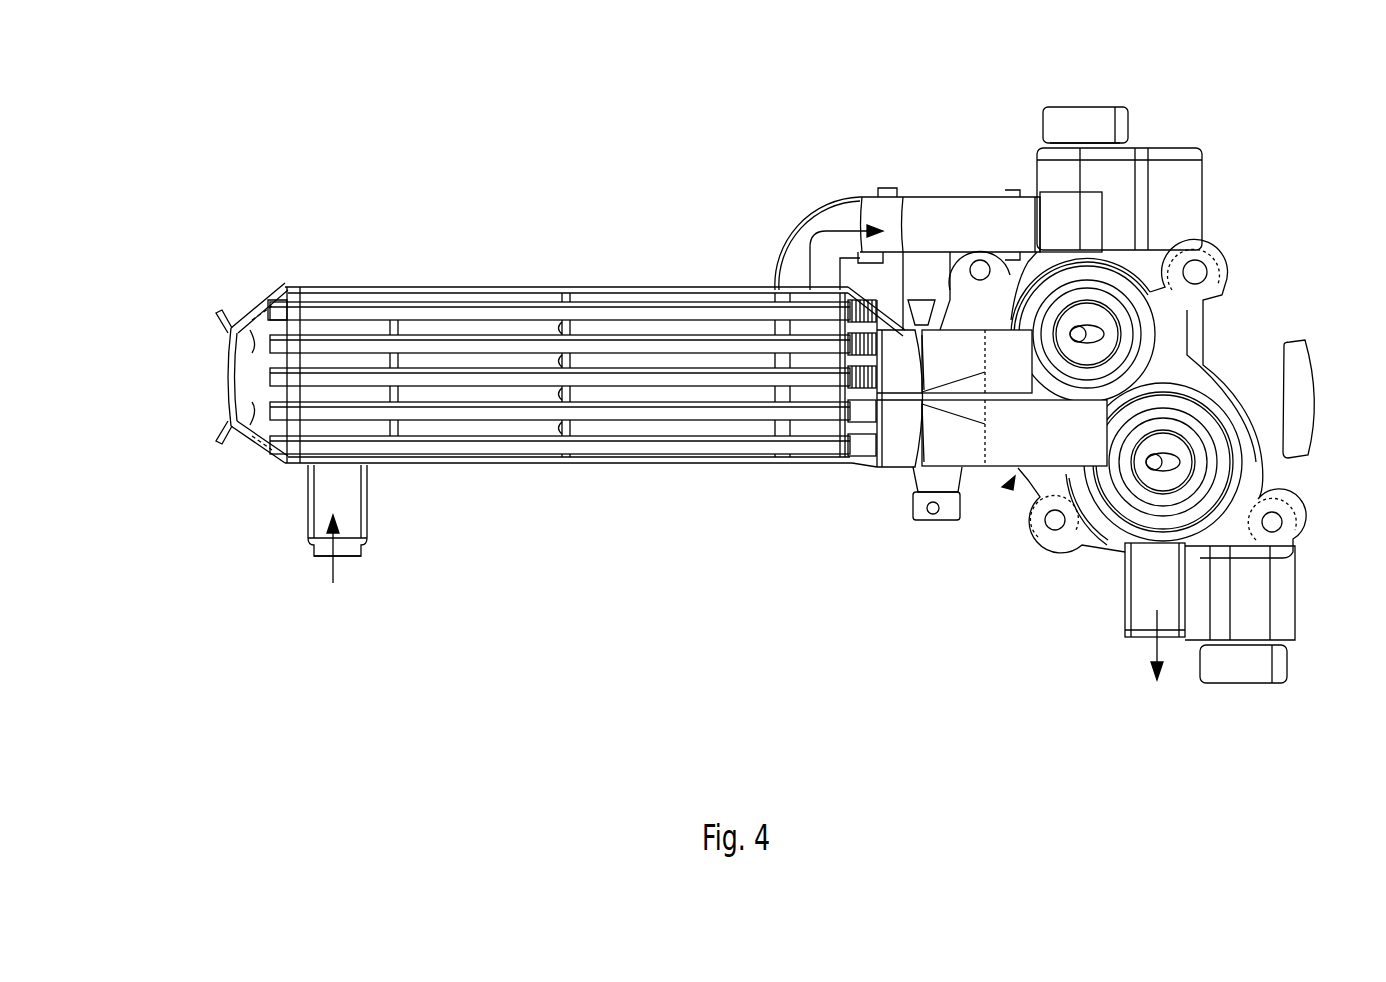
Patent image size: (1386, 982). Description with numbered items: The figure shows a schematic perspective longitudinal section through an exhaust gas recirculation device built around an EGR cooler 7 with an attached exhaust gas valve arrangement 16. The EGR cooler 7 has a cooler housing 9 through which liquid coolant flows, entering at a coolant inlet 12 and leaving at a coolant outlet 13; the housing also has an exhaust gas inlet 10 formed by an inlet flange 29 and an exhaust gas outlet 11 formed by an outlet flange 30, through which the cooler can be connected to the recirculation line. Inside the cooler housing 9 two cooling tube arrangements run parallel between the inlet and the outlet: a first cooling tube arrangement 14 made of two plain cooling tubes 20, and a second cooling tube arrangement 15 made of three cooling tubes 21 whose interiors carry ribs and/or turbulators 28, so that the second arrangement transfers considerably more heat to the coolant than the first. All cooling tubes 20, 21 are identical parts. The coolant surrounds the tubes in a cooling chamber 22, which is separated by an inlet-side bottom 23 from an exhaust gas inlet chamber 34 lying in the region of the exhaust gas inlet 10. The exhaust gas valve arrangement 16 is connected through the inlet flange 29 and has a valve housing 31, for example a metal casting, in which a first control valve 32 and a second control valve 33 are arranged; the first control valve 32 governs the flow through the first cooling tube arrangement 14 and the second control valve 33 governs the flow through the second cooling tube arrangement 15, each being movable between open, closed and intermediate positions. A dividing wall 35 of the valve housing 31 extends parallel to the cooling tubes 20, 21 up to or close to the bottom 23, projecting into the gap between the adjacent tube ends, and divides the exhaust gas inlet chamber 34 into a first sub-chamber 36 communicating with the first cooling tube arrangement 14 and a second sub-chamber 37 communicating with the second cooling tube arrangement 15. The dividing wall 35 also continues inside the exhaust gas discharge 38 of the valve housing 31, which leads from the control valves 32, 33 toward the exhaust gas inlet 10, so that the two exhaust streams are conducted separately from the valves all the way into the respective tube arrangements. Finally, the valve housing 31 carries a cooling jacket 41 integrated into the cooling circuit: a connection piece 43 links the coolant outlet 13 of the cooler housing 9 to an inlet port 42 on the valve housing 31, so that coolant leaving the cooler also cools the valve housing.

The exhaust gas recirculation cooler 7 is at (550, 185).
The cooler housing 9 is at (420, 466).
The exhaust gas inlet 10 is at (905, 465).
The exhaust gas outlet 11 is at (248, 323).
The coolant inlet 12 is at (308, 512).
The coolant outlet 13 is at (806, 262).
The first cooling tube arrangement 14 is at (573, 416).
The second cooling tube arrangement 15 is at (578, 330).
The exhaust gas valve arrangement 16 is at (1010, 483).
The cooling tube 20 is at (476, 412).
The cooling tube 21 is at (485, 376).
The cooling chamber 22 is at (420, 318).
The inlet-side bottom 23 is at (322, 300).
The ribs and/or turbulators 28 is at (845, 378).
The inlet flange 29 is at (935, 522).
The outlet flange 30 is at (222, 440).
The valve housing 31 is at (1116, 542).
The first control valve 32 is at (1186, 465).
The second control valve 33 is at (1092, 316).
The exhaust gas inlet chamber 34 is at (890, 325).
The dividing wall 35 is at (970, 405).
The first sub-chamber 36 is at (886, 437).
The second sub-chamber 37 is at (886, 373).
The exhaust gas discharge 38 is at (1001, 378).
The cooling jacket 41 is at (1160, 376).
The inlet port 42 is at (1037, 195).
The connection piece 43 is at (948, 205).